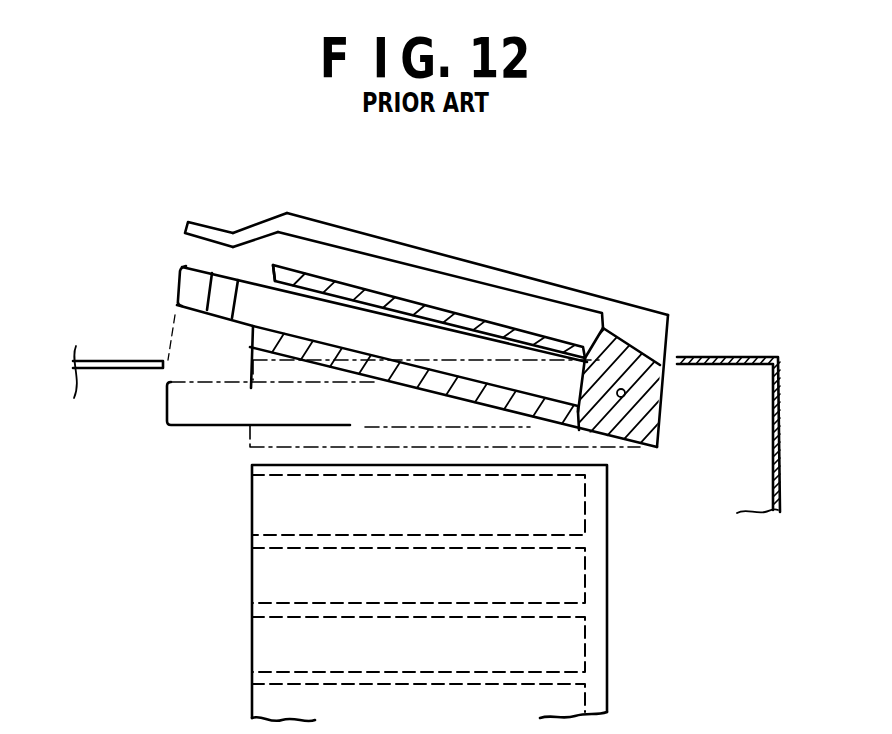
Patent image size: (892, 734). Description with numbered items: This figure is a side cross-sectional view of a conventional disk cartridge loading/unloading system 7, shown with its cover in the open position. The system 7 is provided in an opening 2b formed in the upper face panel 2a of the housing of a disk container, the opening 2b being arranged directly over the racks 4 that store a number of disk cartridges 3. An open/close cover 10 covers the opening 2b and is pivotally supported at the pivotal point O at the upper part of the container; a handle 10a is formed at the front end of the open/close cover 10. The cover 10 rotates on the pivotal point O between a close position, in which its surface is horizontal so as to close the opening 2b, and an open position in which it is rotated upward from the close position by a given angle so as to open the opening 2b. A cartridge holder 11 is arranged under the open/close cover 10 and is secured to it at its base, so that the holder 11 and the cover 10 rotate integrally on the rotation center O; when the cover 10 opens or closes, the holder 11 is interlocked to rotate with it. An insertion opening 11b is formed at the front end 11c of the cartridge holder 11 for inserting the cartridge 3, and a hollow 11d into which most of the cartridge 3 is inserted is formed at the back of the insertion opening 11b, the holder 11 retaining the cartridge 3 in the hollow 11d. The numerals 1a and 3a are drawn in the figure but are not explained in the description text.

The end face of head 1a is at (612, 358).
The upper face panel 2a is at (105, 358).
The opening 2b is at (168, 374).
The disk cartridge 3 is at (180, 287).
The mounting tab 3a is at (240, 280).
The rack 4 is at (596, 612).
The disk cartridge loading/unloading system 7 is at (490, 238).
The open/close cover 10 is at (428, 246).
The handle 10a is at (288, 214).
The cartridge holder 11 is at (604, 318).
The insertion opening 11b is at (268, 278).
The front end 11c is at (346, 284).
The hollow 11d is at (560, 326).
The pivotal point O is at (692, 437).